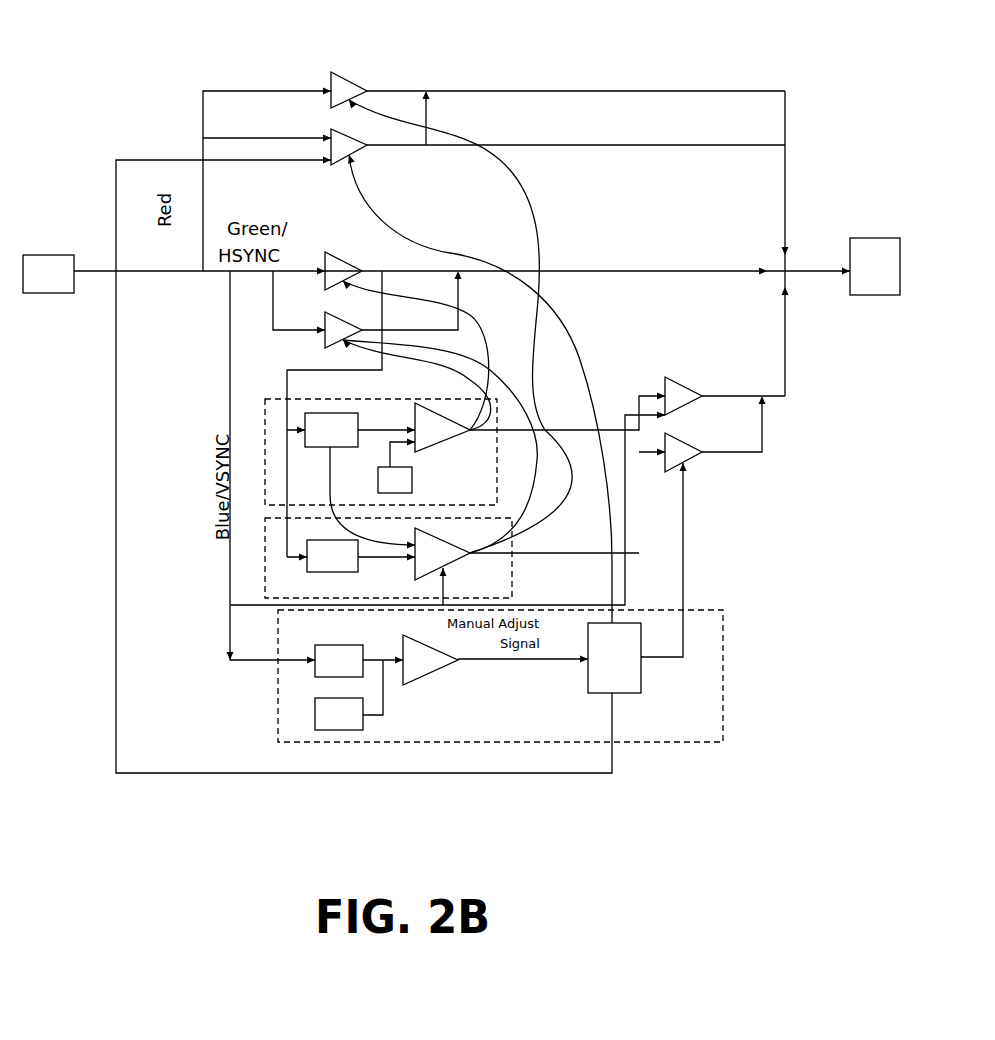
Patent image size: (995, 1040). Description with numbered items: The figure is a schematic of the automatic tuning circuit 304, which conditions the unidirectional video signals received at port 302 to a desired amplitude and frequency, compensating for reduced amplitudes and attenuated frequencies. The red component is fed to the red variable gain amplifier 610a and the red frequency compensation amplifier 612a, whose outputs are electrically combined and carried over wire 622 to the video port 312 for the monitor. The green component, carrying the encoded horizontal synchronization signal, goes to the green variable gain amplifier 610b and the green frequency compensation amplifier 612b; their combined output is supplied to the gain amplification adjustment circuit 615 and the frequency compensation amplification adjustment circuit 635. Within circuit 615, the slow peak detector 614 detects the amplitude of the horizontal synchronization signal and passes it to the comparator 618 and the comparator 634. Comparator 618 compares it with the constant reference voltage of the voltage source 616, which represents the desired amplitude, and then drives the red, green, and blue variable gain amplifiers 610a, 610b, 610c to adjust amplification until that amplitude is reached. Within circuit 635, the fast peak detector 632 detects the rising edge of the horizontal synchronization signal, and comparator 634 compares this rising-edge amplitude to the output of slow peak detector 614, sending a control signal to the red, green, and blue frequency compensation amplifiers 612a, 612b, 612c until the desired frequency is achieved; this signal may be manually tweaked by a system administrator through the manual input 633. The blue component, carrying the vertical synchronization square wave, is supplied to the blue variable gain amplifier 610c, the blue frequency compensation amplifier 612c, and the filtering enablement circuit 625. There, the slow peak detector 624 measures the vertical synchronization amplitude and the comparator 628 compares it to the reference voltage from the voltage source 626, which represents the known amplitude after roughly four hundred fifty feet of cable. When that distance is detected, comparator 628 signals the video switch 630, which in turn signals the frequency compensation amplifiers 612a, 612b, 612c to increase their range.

The port 302 is at (48, 274).
The tuning circuit 304 is at (98, 80).
The video port 312 is at (875, 266).
The red variable gain amplifier 610a is at (349, 90).
The red frequency compensation amplifier 612a is at (349, 147).
The green variable gain amplifier 610b is at (343, 271).
The green frequency compensation amplifier 612b is at (343, 330).
The blue variable gain amplifier 610c is at (683, 396).
The blue frequency compensation amplifier 612c is at (683, 452).
The slow peak detector 614 is at (331, 430).
The gain amplification adjustment circuit 615 is at (258, 405).
The voltage source 616 is at (395, 480).
The comparator 618 is at (442, 427).
The wire 622 is at (808, 263).
The slow peak detector 624 is at (339, 661).
The filtering enablement circuit 625 is at (275, 713).
The voltage source 626 is at (339, 714).
The comparator 628 is at (430, 660).
The video switch 630 is at (614, 658).
The fast peak detector 632 is at (332, 556).
The manual input 633 is at (488, 574).
The comparator 634 is at (442, 554).
The frequency compensation amplification adjustment circuit 635 is at (258, 569).